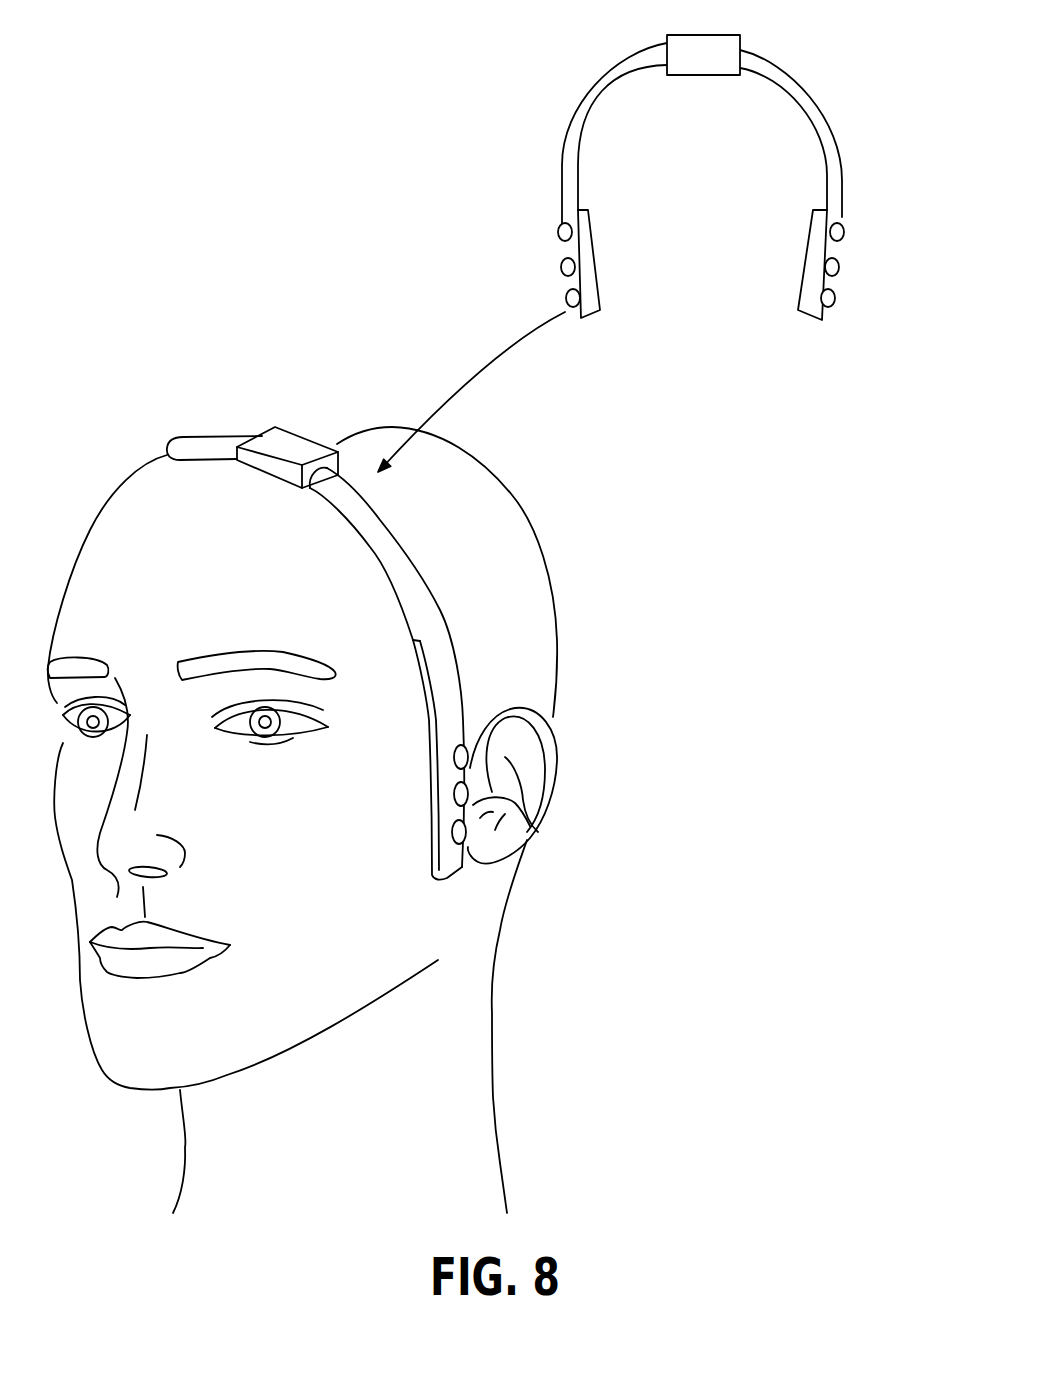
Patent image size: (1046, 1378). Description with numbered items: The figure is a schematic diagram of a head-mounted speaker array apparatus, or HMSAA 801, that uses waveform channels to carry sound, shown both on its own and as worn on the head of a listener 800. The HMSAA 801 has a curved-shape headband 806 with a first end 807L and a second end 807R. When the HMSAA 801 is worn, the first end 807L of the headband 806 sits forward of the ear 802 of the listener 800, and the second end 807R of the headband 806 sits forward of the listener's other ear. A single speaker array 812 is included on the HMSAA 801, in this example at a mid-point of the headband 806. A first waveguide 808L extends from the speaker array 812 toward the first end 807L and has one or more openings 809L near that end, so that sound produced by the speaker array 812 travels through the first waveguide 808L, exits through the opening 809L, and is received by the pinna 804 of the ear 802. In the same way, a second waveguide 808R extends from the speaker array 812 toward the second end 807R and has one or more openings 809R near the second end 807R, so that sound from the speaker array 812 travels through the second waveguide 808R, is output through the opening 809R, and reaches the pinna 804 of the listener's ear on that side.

The listener 800 is at (463, 493).
The head-mounted speaker array apparatus 801 is at (523, 498).
The ear 802 is at (531, 775).
The pinna 804 is at (530, 823).
The headband 806 is at (375, 527).
The first end 807L is at (448, 878).
The second end 807R is at (588, 320).
The first waveguide 808L is at (433, 642).
The second waveguide 808R is at (182, 443).
The opening 809L is at (465, 735).
The opening 809R is at (565, 265).
The speaker array 812 is at (328, 437).